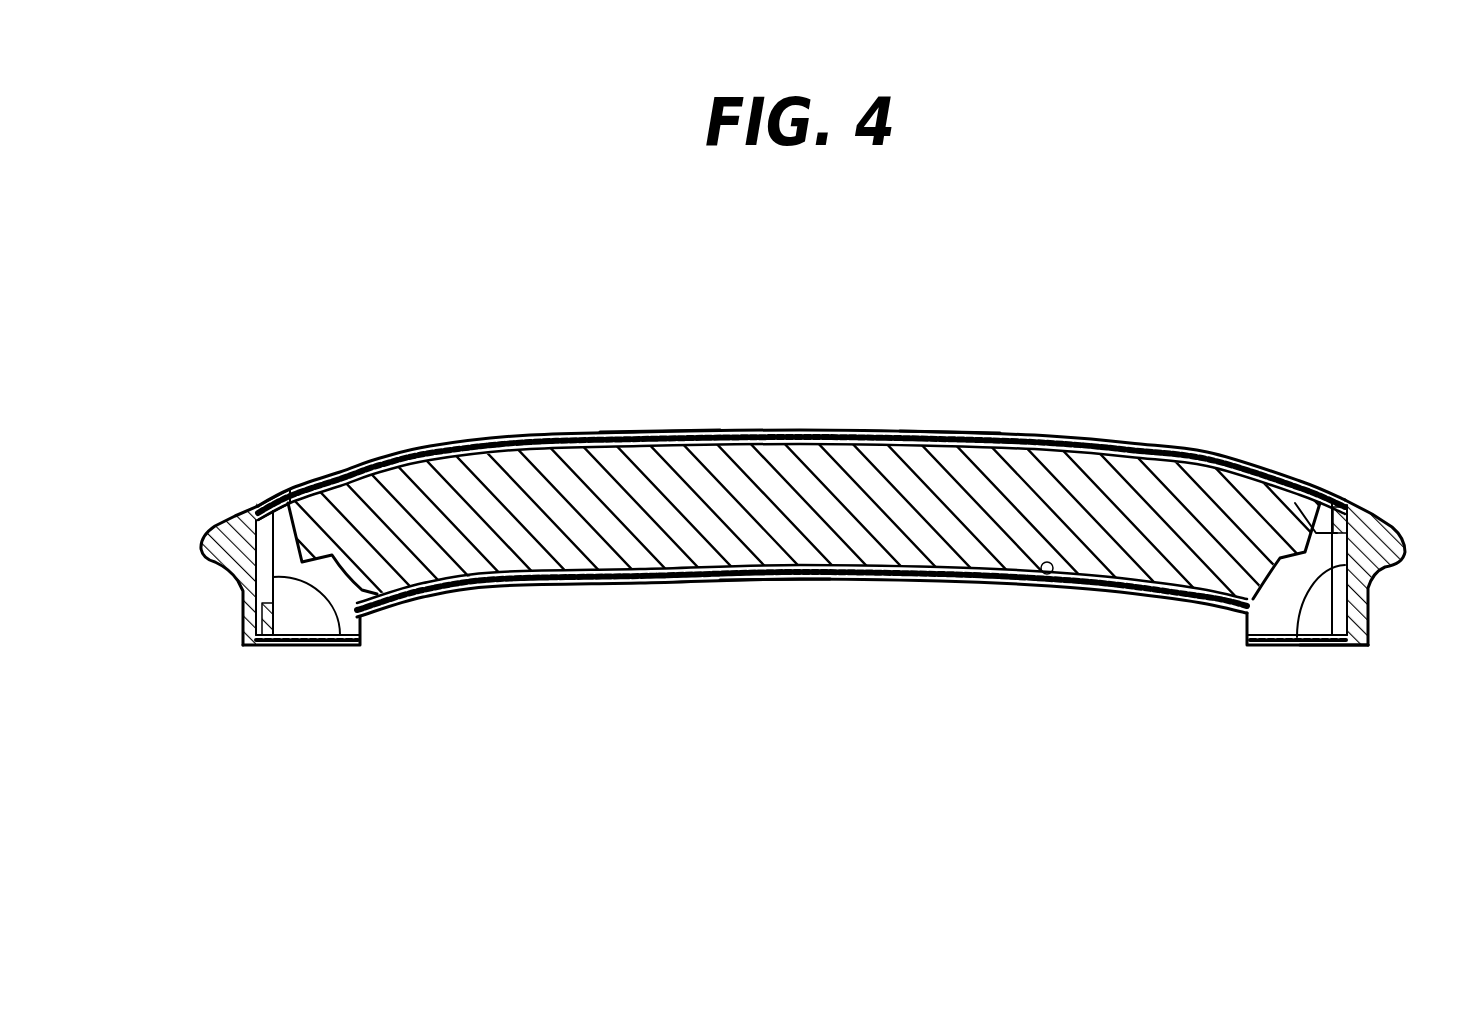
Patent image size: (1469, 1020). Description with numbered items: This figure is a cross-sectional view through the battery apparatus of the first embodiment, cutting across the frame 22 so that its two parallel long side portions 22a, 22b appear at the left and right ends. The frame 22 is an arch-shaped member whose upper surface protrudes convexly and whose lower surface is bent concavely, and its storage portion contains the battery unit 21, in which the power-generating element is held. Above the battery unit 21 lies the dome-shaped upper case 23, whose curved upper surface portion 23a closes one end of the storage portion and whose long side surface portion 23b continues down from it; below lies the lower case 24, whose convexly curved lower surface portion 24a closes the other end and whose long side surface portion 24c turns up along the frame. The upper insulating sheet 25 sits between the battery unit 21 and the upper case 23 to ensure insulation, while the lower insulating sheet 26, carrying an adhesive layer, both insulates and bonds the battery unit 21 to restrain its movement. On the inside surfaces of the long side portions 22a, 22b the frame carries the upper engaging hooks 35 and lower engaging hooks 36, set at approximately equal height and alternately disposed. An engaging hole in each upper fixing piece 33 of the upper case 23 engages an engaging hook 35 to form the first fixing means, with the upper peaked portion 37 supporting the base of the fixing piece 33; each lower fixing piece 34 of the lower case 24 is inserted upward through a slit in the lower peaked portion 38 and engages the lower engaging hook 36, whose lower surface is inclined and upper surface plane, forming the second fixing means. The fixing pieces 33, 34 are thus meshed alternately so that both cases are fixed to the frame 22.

The battery unit 21 is at (1055, 490).
The frame 22 is at (782, 560).
The long side portion 22a is at (210, 522).
The long side portion 22b is at (1395, 527).
The upper case 23 is at (832, 423).
The upper surface portion 23a is at (948, 431).
The long side surface portion 23b is at (262, 503).
The lower case 24 is at (908, 592).
The lower surface portion 24a is at (772, 587).
The long side surface portion 24c is at (1350, 647).
The insulating sheet 25 is at (658, 432).
The insulating sheet 26 is at (1047, 576).
The fixing piece 33 is at (1328, 640).
The fixing piece 34 is at (268, 553).
The engaging hook 35 is at (1300, 642).
The engaging hook 36 is at (340, 640).
The peaked portion 37 is at (1285, 498).
The peaked portion 38 is at (300, 648).